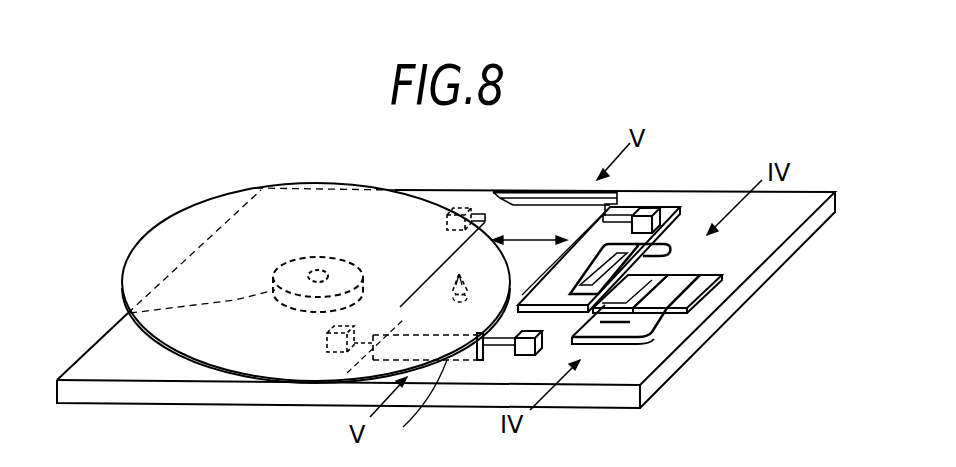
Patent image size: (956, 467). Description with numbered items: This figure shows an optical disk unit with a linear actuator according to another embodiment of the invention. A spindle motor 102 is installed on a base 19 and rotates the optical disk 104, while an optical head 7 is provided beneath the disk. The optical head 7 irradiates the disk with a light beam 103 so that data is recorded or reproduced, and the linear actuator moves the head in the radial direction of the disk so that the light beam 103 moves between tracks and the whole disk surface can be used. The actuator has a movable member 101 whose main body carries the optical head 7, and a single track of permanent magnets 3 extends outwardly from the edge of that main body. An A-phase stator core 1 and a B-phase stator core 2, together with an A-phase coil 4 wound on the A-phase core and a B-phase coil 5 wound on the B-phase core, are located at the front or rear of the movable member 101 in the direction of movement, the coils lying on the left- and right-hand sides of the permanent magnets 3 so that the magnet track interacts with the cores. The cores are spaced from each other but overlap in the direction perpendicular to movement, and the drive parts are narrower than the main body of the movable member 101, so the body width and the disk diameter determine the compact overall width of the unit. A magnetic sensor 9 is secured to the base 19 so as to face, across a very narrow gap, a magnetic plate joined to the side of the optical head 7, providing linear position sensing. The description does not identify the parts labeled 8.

The A-phase stator core 1 is at (648, 302).
The B-phase stator core 2 is at (670, 250).
The permanent magnets 3 is at (712, 282).
The A-phase coil 4 is at (655, 310).
The B-phase coil 5 is at (693, 228).
The optical head 7 is at (318, 390).
The guide block 8 is at (482, 213).
The magnetic sensor 9 is at (530, 192).
The base 19 is at (190, 397).
The movable member 101 is at (415, 408).
The spindle motor 102 is at (157, 338).
The light beam 103 is at (455, 275).
The optical disk 104 is at (217, 205).